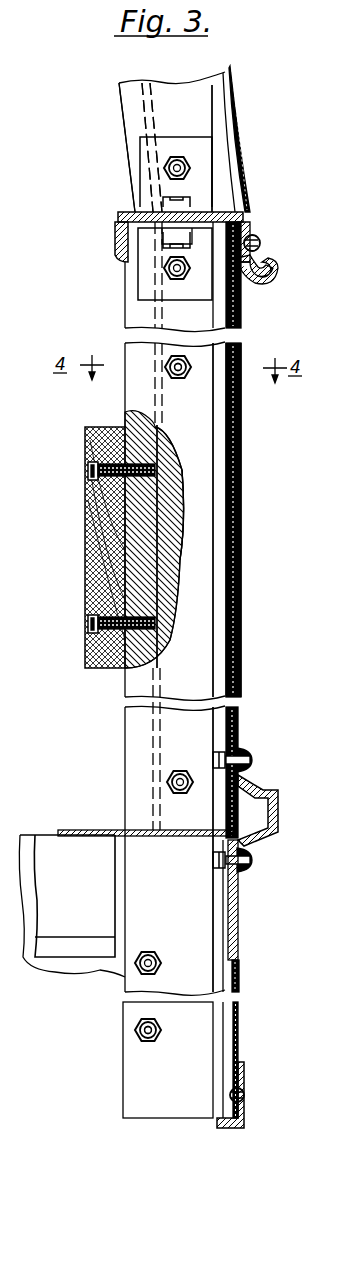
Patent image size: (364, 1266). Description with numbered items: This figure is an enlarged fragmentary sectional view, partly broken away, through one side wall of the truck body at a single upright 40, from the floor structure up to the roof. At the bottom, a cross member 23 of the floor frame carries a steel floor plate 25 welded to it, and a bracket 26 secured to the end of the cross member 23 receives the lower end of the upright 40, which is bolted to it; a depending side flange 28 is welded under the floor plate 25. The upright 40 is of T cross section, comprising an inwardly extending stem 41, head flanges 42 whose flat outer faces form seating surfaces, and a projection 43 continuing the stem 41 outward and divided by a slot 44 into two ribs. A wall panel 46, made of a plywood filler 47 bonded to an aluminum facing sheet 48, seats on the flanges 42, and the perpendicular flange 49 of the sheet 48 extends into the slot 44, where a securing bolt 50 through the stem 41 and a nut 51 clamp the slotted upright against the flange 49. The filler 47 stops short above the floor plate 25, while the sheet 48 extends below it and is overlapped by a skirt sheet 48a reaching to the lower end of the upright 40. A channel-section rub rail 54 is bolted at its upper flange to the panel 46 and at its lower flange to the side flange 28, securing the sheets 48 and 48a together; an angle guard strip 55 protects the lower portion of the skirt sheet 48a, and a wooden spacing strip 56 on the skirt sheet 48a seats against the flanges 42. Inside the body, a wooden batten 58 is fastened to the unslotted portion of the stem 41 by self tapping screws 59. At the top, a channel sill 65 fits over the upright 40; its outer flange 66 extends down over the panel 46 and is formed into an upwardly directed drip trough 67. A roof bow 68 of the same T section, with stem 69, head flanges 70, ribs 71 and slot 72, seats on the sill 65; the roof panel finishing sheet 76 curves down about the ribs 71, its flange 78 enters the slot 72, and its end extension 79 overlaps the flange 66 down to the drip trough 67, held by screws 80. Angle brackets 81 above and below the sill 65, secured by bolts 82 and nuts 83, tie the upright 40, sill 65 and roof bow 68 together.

The cross member 23 is at (70, 932).
The steel floor plate 25 is at (80, 830).
The bracket 26 is at (93, 972).
The side flange 28 is at (240, 932).
The upright 40 is at (120, 733).
The stem 41 is at (130, 756).
The flange 42 is at (216, 666).
The projection 43 is at (238, 838).
The slot 44 is at (157, 490).
The panel 46 is at (243, 588).
The filler 47 is at (242, 632).
The facing sheet 48 is at (242, 556).
The skirt sheet 48a is at (239, 967).
The flange 49 is at (168, 515).
The securing bolt 50 is at (172, 372).
The nut 51 is at (170, 362).
The rub rail 54 is at (279, 808).
The angle guard strip 55 is at (246, 1078).
The spacing strip 56 is at (226, 1032).
The wooden batten 58 is at (86, 530).
The self tapping screw 59 is at (88, 470).
The sill 65 is at (118, 216).
The outer flange 66 is at (245, 232).
The drip trough 67 is at (278, 278).
The roof bow 68 is at (120, 110).
The stem 69 is at (125, 92).
The head flange 70 is at (215, 92).
The rib 71 is at (232, 107).
The slot 72 is at (148, 90).
The finishing sheet 76 is at (248, 135).
The flange 78 is at (148, 122).
The end extension 79 is at (252, 262).
The screw 80 is at (258, 242).
The angle bracket 81 is at (143, 157).
The bolt 82 is at (178, 205).
The nut 83 is at (168, 170).